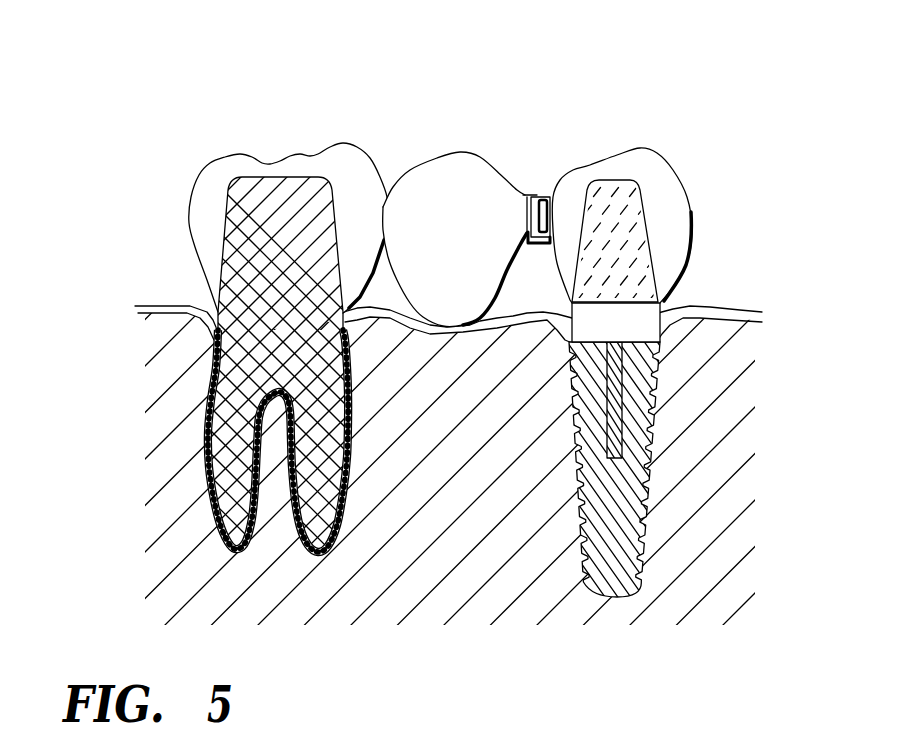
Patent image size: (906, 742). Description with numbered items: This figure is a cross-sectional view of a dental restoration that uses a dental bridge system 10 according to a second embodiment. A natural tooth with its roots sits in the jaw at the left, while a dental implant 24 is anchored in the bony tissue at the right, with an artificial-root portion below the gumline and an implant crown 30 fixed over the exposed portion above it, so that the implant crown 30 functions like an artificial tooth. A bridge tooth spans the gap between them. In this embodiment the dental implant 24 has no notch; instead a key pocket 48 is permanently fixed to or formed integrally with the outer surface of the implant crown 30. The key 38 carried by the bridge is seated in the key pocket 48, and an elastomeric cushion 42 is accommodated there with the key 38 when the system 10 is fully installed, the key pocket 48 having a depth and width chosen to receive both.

The system 10 is at (603, 82).
The dental implant 24 is at (718, 239).
The implant crown 30 is at (667, 185).
The key 38 is at (534, 203).
The elastomeric cushion 42 is at (546, 218).
The key pocket 48 is at (533, 246).